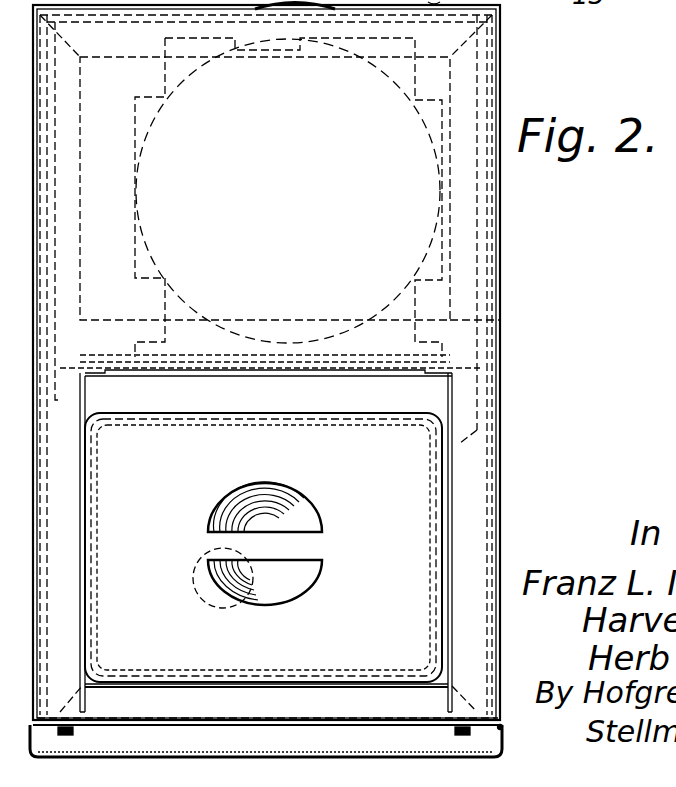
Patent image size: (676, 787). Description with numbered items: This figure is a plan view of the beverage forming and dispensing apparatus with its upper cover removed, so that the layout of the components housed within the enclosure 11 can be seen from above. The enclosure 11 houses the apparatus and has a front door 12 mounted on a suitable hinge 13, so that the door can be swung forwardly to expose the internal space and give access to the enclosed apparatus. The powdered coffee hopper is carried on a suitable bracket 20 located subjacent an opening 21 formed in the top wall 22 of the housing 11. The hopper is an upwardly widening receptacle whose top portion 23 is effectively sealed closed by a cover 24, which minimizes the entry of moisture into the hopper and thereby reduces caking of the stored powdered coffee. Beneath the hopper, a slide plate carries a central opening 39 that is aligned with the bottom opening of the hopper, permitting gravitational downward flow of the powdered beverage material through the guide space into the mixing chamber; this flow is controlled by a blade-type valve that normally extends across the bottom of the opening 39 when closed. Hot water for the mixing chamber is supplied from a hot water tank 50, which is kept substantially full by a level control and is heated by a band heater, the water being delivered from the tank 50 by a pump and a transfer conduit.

The enclosure 11 is at (500, 328).
The front door 12 is at (504, 746).
The hinge 13 is at (497, 722).
The bracket 20 is at (460, 445).
The opening 21 is at (345, 686).
The top wall 22 is at (382, 705).
The top portion 23 is at (290, 670).
The cover 24 is at (440, 497).
The central opening 39 is at (205, 600).
The hot water tank 50 is at (442, 270).